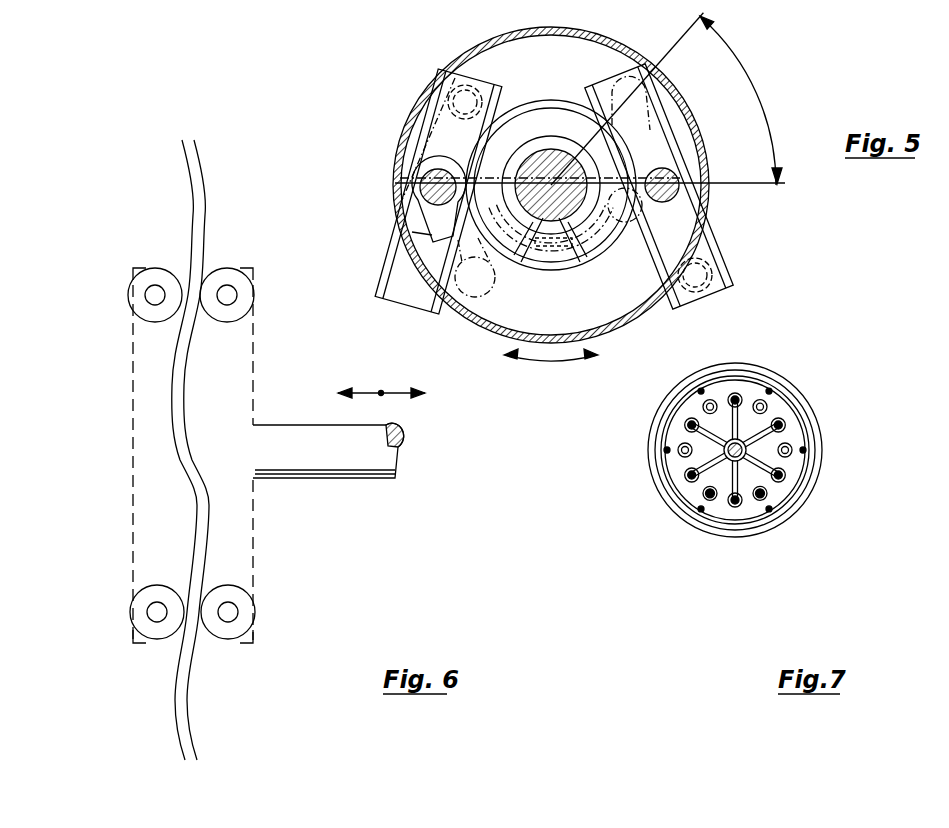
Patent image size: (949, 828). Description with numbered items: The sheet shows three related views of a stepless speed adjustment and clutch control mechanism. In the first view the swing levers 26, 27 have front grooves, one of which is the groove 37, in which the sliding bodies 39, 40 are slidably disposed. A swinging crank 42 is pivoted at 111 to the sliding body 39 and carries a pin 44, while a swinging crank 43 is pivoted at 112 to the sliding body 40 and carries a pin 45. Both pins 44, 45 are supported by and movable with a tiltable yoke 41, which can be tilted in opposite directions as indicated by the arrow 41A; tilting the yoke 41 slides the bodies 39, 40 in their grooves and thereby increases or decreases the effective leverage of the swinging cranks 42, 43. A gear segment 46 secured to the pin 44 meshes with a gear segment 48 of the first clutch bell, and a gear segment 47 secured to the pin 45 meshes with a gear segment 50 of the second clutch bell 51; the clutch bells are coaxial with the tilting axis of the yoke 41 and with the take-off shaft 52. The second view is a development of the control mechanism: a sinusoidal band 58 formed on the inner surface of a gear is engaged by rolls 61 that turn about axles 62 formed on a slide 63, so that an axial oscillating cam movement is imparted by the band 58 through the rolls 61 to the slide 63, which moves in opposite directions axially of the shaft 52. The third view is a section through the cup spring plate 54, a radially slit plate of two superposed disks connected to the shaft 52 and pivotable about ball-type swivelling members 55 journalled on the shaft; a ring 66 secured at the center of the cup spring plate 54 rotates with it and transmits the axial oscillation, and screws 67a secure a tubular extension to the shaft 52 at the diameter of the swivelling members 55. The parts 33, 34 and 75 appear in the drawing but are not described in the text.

In FIG. 5, the swing lever 26 is at (420, 234).
In FIG. 5, the swing lever 27 is at (708, 235).
In FIG. 5, the spring pawl 33 is at (528, 258).
In FIG. 5, the spring pawl 34 is at (596, 244).
In FIG. 5, the front groove 37 is at (400, 261).
In FIG. 5, the sliding body 39 is at (441, 100).
In FIG. 5, the sliding body 40 is at (708, 278).
In FIG. 5, the yoke 41 is at (488, 52).
In FIG. 5, the arrow 41A is at (548, 370).
In FIG. 5, the swinging crank 42 is at (434, 124).
In FIG. 5, the swinging crank 43 is at (707, 252).
In FIG. 5, the pin 44 is at (432, 180).
In FIG. 5, the pin 45 is at (675, 180).
In FIG. 5, the gear segment 46 is at (428, 216).
In FIG. 5, the gear segment 47 is at (633, 163).
In FIG. 5, the gear segment 48 is at (475, 267).
In FIG. 5, the gear segment 50 is at (618, 228).
In FIG. 5, the second clutch bell 51 is at (556, 258).
In FIG. 5, the take-off shaft 52 is at (550, 158).
In FIG. 7, the cup spring plate 54 is at (781, 405).
In FIG. 7, the swivelling members 55 is at (782, 475).
In FIG. 6, the sinusoidal band 58 is at (182, 426).
In FIG. 6, the rolls 61 is at (244, 312).
In FIG. 6, the axles 62 is at (232, 293).
In FIG. 6, the slide 63 is at (340, 463).
In FIG. 7, the slide 63 is at (724, 447).
In FIG. 7, the ring 66 is at (720, 465).
In FIG. 7, the screws 67a is at (758, 500).
In FIG. 7, the rim 75 is at (783, 393).
In FIG. 5, the pivot 111 is at (472, 96).
In FIG. 5, the pivot 112 is at (697, 277).